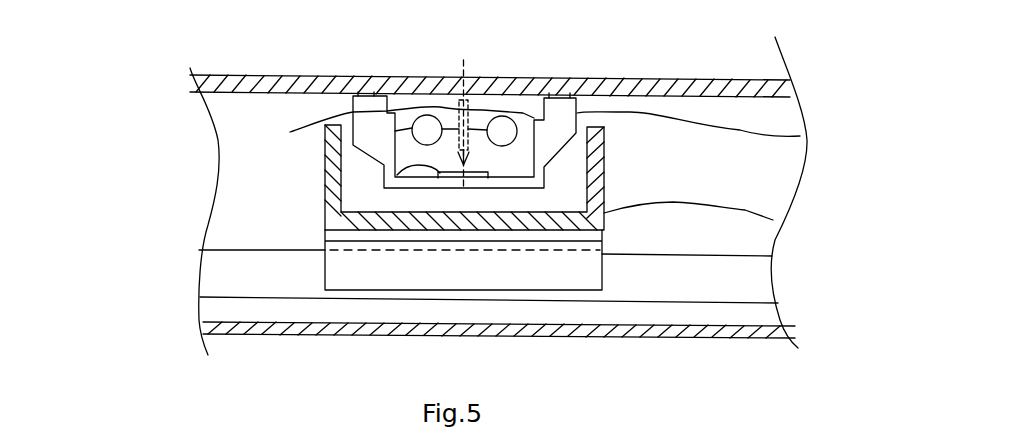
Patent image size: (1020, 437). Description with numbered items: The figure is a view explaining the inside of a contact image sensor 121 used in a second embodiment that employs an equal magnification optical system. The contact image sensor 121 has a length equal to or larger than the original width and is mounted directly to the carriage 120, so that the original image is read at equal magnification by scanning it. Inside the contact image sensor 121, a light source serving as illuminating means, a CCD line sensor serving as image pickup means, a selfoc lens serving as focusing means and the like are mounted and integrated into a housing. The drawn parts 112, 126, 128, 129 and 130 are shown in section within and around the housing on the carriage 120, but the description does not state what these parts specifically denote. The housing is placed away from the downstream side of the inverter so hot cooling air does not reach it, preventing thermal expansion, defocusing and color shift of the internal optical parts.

The housing frame 112 is at (790, 92).
The carriage 120 is at (619, 207).
The contact image sensor 121 is at (800, 136).
The rollers 126 is at (395, 131).
The holder bracket 128 is at (382, 181).
The cutter blade 129 is at (458, 146).
The anvil plate 130 is at (442, 172).